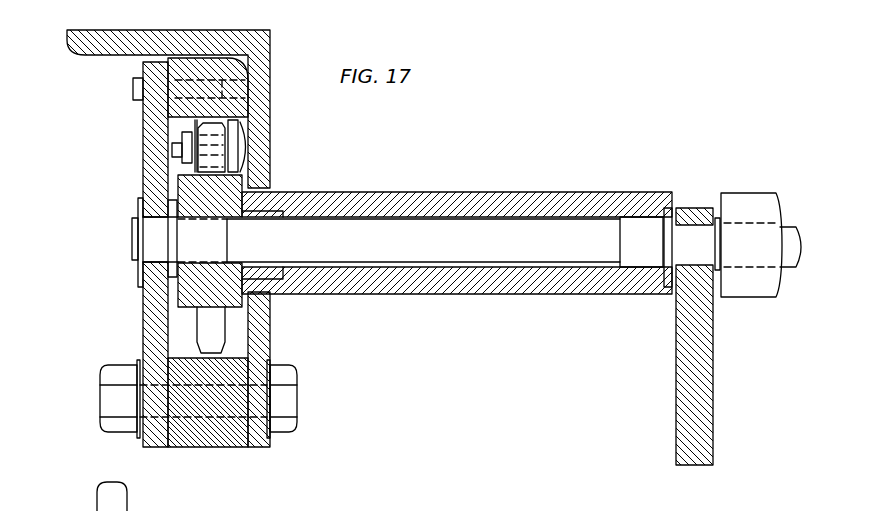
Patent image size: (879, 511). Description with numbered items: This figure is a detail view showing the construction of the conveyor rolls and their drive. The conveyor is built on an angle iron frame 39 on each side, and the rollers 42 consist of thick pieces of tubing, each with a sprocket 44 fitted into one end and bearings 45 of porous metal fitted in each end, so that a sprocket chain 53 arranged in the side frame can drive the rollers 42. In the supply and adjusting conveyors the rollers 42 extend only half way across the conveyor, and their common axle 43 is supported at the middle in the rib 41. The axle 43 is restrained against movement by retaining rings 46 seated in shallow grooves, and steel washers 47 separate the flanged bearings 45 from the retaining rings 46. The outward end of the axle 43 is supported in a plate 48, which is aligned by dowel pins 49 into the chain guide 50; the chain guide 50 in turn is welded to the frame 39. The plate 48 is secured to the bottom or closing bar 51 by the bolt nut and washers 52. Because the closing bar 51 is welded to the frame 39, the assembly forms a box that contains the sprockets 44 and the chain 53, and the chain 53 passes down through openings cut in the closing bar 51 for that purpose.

The angle iron frame 39 is at (272, 101).
The rib 41 is at (682, 387).
The rollers 42 is at (383, 191).
The common axle 43 is at (497, 264).
The sprocket 44 is at (178, 185).
The bearings 45 is at (178, 293).
The retaining rings 46 is at (168, 238).
The steel washers 47 is at (168, 282).
The plate 48 is at (143, 150).
The dowel pins 49 is at (133, 93).
The chain guide 50 is at (240, 110).
The closing bar 51 is at (207, 445).
The bolt nut and washers 52 is at (298, 400).
The sprocket chain 53 is at (245, 165).